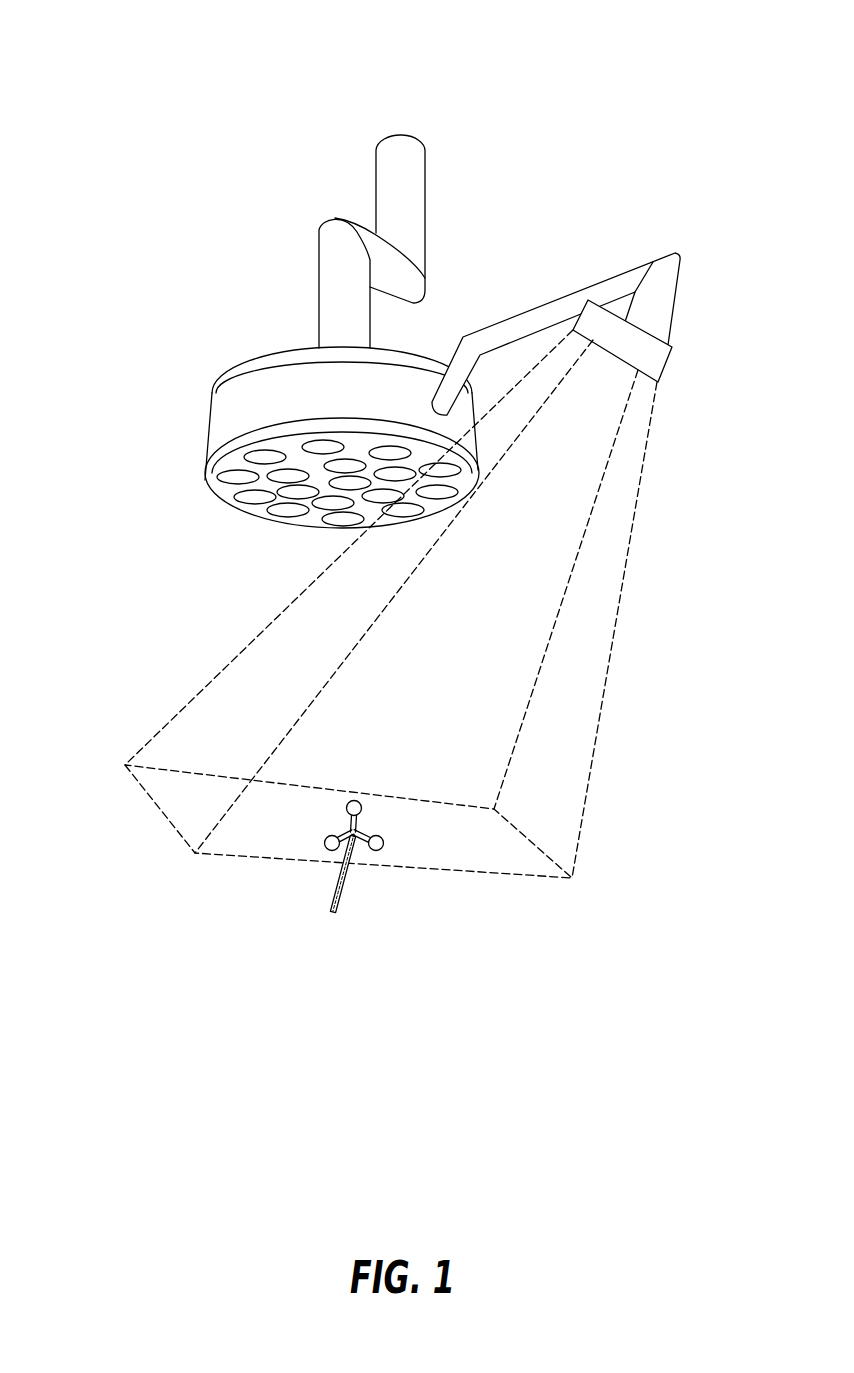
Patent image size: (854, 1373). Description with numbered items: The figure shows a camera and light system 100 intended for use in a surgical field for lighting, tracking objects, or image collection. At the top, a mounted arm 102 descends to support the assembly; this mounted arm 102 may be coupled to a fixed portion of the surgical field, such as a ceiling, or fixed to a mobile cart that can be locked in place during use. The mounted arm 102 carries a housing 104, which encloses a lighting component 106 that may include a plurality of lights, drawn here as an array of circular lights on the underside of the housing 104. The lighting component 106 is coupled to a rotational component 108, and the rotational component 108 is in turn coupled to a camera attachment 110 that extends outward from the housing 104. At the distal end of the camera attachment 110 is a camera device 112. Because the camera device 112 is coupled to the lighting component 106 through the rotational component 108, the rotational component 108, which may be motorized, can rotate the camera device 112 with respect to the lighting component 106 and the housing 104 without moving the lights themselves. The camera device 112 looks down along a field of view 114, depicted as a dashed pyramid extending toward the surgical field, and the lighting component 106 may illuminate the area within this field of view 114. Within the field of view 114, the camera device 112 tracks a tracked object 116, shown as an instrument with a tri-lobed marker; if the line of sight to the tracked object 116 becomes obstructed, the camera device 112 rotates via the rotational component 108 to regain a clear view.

The camera and light system 100 is at (656, 42).
The mounted arm 102 is at (425, 190).
The housing 104 is at (268, 353).
The lighting component 106 is at (253, 503).
The rotational component 108 is at (210, 420).
The camera attachment 110 is at (680, 255).
The camera device 112 is at (672, 347).
The field of view 114 is at (577, 848).
The tracked object 116 is at (333, 912).